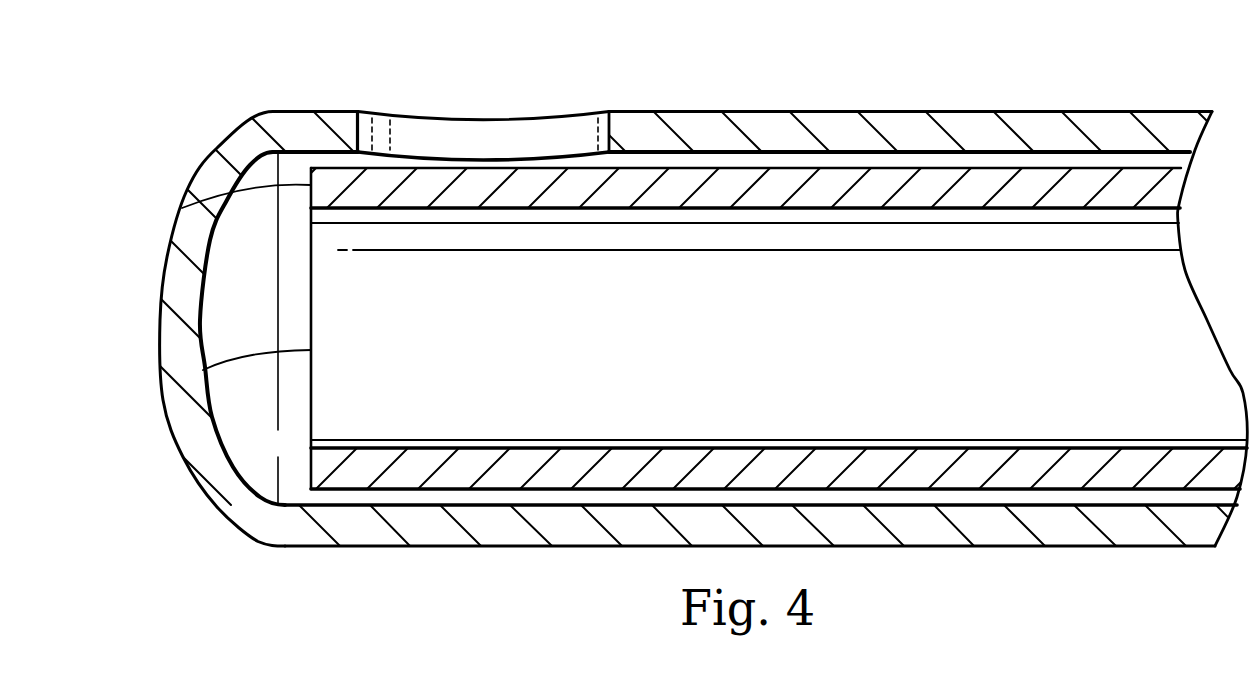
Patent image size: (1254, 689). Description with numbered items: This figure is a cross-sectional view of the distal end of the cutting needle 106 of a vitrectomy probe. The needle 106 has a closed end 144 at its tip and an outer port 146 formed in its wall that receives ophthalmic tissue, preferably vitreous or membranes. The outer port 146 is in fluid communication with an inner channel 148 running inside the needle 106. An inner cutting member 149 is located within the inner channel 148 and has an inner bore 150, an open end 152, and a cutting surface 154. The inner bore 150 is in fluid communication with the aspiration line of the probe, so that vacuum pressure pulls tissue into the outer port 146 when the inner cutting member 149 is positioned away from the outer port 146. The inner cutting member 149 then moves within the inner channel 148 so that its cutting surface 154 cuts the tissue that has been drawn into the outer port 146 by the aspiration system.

The needle 106 is at (1102, 122).
The closed end 144 is at (160, 327).
The outer port 146 is at (480, 130).
The inner channel 148 is at (335, 162).
The inner cutting member 149 is at (1030, 463).
The inner bore 150 is at (792, 352).
The open end 152 is at (203, 370).
The cutting surface 154 is at (182, 208).